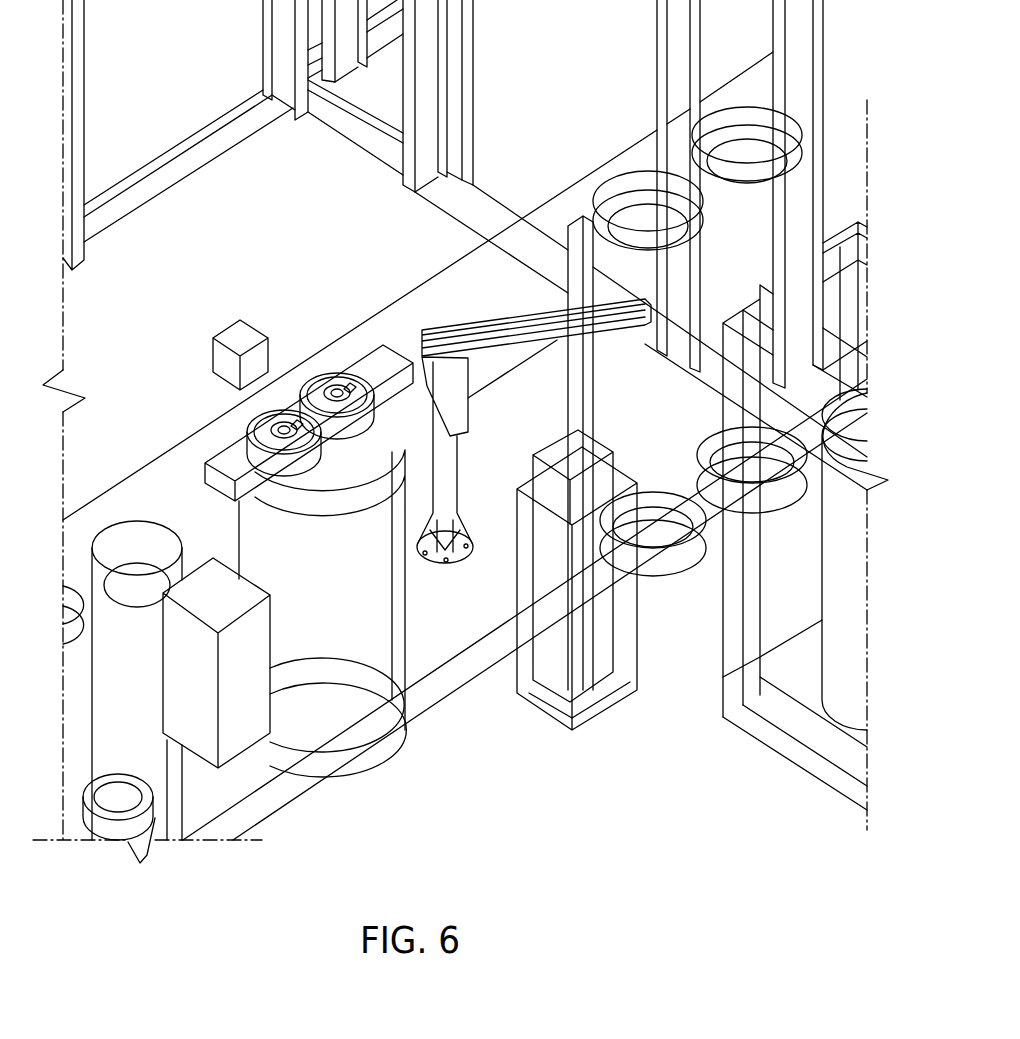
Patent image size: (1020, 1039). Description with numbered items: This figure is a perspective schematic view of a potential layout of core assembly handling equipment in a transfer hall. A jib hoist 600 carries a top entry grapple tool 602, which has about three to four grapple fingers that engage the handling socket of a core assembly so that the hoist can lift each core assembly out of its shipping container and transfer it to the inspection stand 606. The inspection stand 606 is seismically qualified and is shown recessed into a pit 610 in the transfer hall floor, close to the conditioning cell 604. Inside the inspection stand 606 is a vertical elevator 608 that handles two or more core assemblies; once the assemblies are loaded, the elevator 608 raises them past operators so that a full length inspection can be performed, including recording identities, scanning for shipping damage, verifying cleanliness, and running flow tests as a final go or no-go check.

The jib hoist 600 is at (517, 318).
The top entry grapple tool 602 is at (450, 528).
The conditioning cell 604 is at (290, 406).
The inspection stand 606 is at (609, 472).
The vertical elevator 608 is at (604, 603).
The pit 610 is at (553, 718).